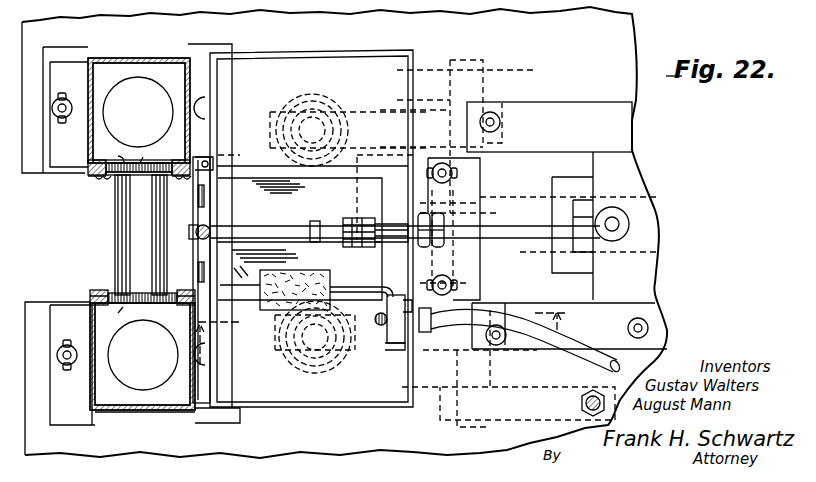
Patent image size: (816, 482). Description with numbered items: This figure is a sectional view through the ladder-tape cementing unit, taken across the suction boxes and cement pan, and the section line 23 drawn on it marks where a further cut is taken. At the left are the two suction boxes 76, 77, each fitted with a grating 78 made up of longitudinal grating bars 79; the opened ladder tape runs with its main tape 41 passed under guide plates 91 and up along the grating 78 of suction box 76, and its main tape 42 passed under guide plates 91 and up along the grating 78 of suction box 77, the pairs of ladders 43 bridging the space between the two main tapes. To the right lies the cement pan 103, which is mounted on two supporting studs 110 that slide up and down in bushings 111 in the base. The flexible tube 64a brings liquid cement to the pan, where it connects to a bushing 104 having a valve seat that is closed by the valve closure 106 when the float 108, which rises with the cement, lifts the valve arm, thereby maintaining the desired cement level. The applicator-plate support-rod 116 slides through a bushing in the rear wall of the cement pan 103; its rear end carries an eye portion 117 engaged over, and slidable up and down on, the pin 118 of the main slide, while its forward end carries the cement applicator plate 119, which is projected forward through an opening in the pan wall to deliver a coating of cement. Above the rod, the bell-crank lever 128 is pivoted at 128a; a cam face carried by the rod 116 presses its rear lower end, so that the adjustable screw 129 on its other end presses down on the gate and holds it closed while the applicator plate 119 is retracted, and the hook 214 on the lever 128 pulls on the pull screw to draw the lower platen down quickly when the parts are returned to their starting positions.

The suction box 77 is at (124, 42).
The suction box 76 is at (122, 400).
The longitudinal grating bars 79 is at (111, 239).
The grating 78 is at (143, 172).
The main tape 41 is at (118, 292).
The main tape 42 is at (135, 175).
The ladders 43 is at (153, 238).
The guide plates 91 is at (98, 178).
The hook 214 is at (196, 236).
The adjustable screw 129 is at (210, 230).
The cement pan 103 is at (392, 35).
The cement applicator plate 119 is at (258, 156).
The supporting studs 110 is at (312, 130).
The bushings 111 is at (328, 108).
The float 108 is at (316, 276).
The bell-crank lever 128 is at (298, 237).
The pivot 128a is at (316, 222).
The bushing 104 is at (398, 347).
The valve closure 106 is at (389, 326).
The applicator-plate support-rod 116 is at (530, 222).
The pin 118 is at (614, 224).
The eye portion 117 is at (626, 230).
The flexible tube 64a is at (580, 360).
The section line 23- 23 is at (392, 353).